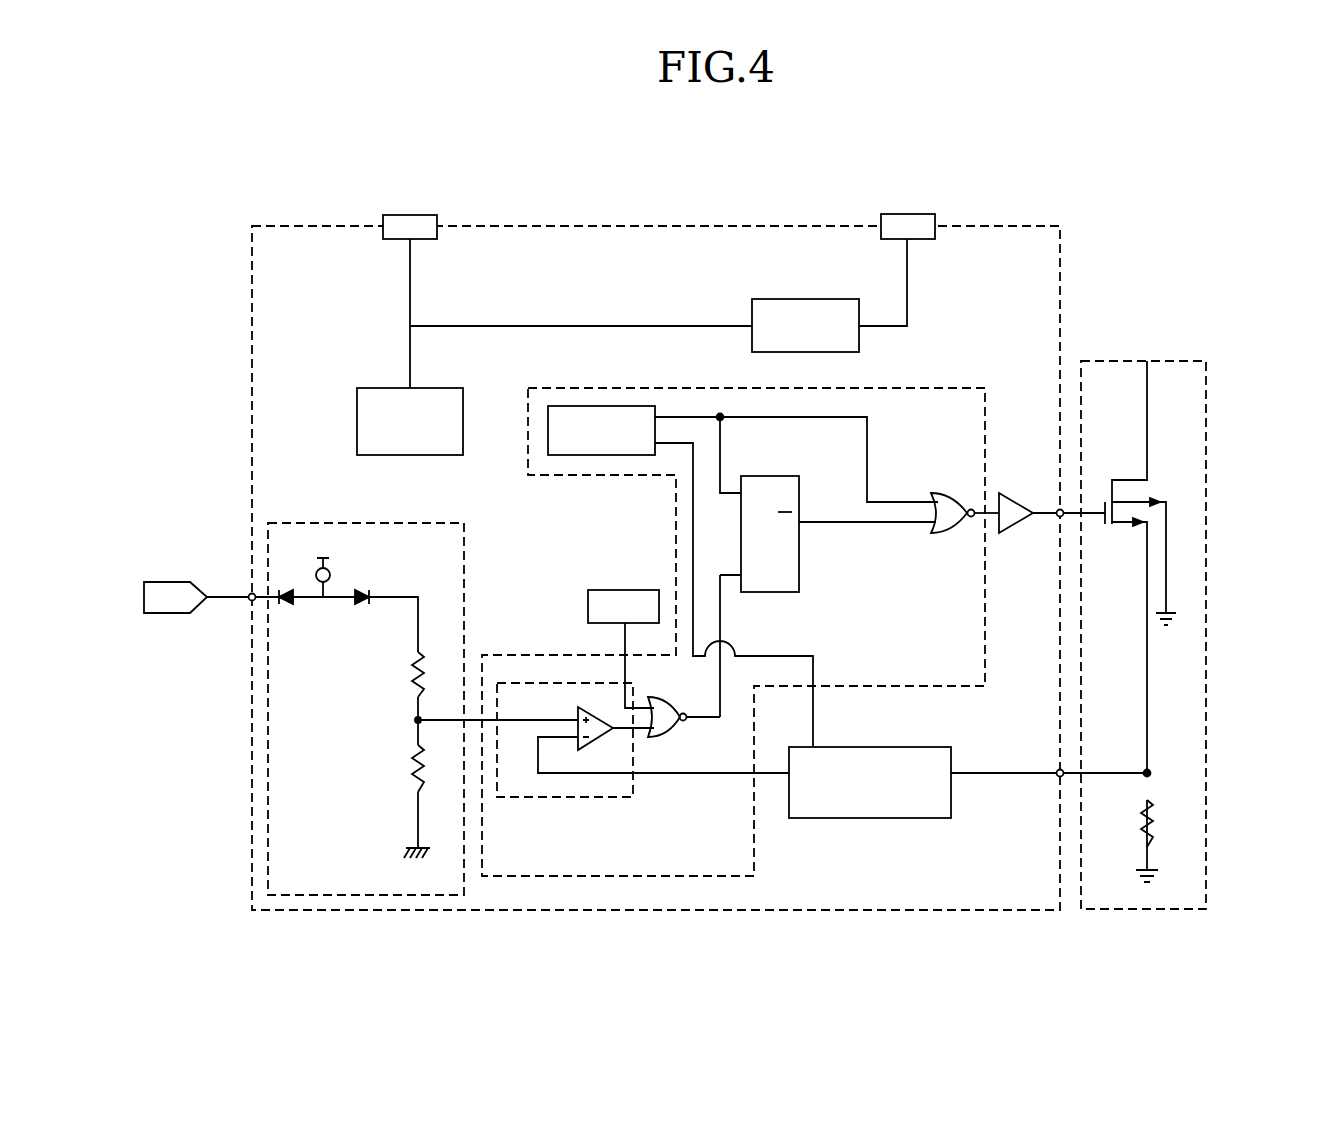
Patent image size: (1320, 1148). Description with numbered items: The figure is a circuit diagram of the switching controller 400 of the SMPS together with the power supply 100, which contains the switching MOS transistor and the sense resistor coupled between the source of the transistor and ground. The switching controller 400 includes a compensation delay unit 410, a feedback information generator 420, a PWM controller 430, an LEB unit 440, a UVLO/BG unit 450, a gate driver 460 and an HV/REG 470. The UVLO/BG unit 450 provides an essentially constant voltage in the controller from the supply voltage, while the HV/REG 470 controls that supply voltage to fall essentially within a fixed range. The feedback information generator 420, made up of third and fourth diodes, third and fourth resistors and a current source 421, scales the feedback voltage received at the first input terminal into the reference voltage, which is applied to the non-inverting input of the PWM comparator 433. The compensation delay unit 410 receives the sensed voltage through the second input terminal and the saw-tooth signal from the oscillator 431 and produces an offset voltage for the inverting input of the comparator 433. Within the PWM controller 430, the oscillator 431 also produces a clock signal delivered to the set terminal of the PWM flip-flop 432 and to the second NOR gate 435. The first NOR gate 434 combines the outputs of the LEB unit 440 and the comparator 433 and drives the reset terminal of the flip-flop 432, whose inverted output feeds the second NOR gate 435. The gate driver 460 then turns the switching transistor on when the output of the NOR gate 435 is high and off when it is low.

The power supply 100 is at (1206, 524).
The switching controller 400 is at (345, 226).
The compensation delay unit 410 is at (878, 818).
The feedback information generator 420 is at (464, 540).
The current source 421 is at (331, 571).
The PWM controller 430 is at (985, 400).
The oscillator 431 is at (573, 405).
The PWM flip-flop 432 is at (799, 573).
The PWM comparator 433 is at (598, 797).
The first NOR gate 434 is at (666, 736).
The second NOR gate 435 is at (943, 493).
The LEB unit 440 is at (604, 589).
The UVLO/BG unit 450 is at (357, 425).
The gate driver 460 is at (1017, 533).
The HV/REG 470 is at (859, 345).